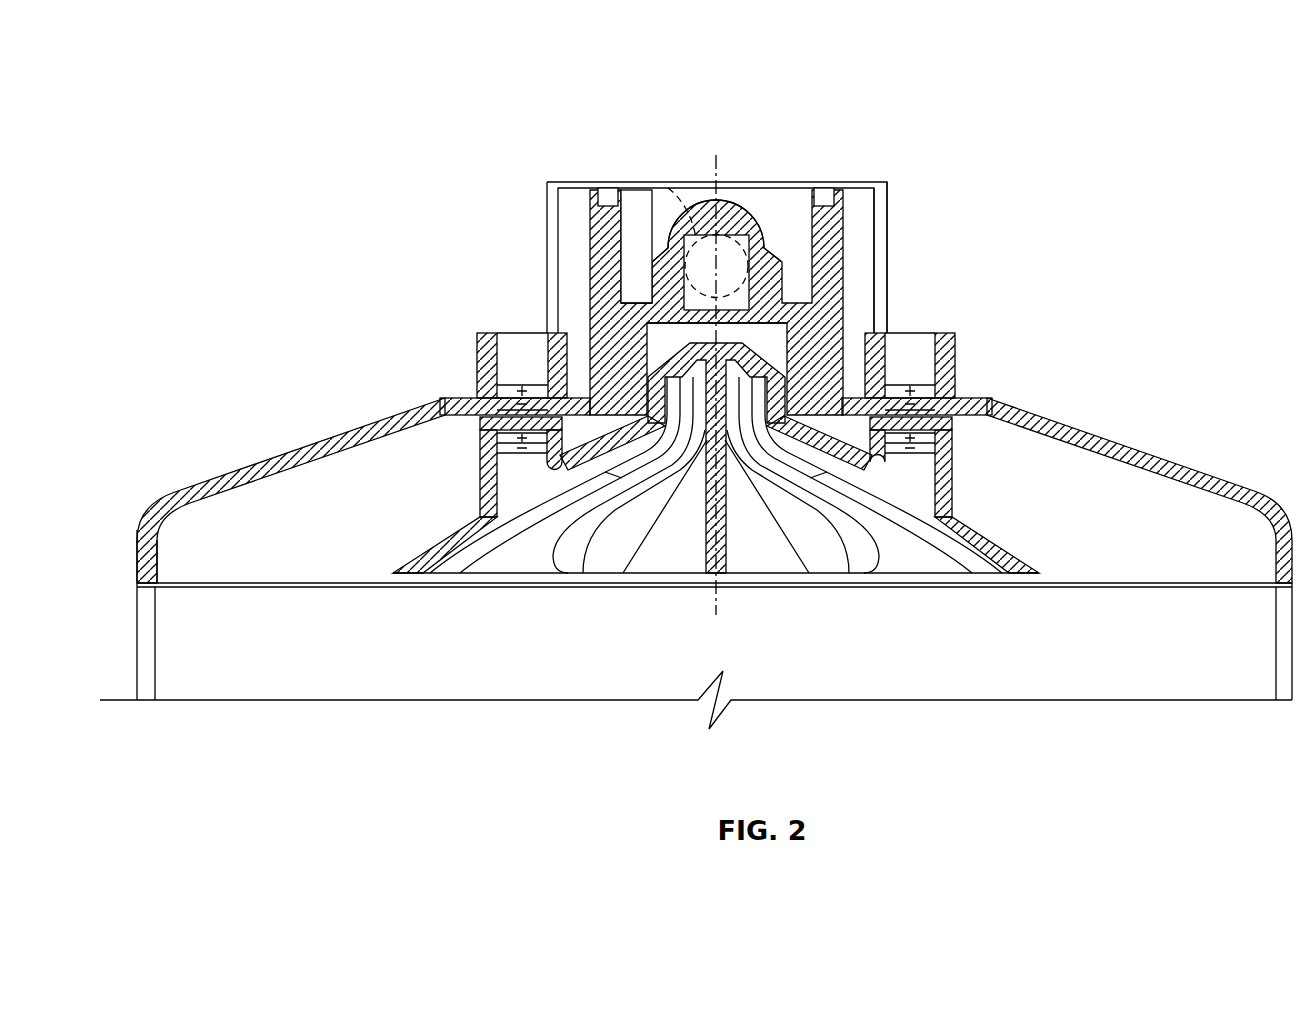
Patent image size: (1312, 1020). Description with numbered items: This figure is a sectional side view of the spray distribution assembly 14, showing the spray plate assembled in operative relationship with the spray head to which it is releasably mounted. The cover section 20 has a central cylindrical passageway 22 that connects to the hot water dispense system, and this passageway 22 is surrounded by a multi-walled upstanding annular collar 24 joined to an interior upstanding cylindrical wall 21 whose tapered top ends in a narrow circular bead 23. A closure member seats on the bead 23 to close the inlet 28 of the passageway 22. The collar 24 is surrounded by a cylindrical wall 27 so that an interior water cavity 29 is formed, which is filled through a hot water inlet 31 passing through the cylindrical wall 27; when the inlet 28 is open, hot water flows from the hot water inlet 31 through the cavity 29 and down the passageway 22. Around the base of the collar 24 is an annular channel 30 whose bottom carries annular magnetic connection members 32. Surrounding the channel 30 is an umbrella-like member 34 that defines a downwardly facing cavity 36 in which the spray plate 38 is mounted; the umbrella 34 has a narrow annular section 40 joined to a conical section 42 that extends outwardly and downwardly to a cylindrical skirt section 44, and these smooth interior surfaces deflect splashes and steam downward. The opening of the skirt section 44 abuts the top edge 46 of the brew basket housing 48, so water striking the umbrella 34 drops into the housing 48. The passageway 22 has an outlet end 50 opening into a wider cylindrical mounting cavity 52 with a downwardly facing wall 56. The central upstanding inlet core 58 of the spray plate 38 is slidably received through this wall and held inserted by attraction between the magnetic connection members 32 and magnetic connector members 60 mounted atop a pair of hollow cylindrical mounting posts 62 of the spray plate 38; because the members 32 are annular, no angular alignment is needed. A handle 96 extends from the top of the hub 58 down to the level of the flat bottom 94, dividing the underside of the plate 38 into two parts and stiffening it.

The spray distribution assembly 14 is at (903, 318).
The cover section 20 is at (828, 263).
The interior upstanding cylindrical wall 21 is at (637, 305).
The central cylindrical passageway 22 is at (742, 258).
The bead 23 is at (684, 230).
The upstanding annular collar 24 is at (568, 228).
The cylindrical wall 27 is at (837, 222).
The inlet 28 is at (730, 228).
The interior water cavity 29 is at (655, 195).
The annular channel 30 is at (923, 363).
The hot water inlet 31 is at (673, 190).
The magnetic connection members 32 is at (925, 393).
The umbrella-like member 34 is at (1093, 420).
The downwardly facing cavity 36 is at (1127, 567).
The spray plate 38 is at (757, 552).
The annular section 40 is at (440, 393).
The conical section 42 is at (255, 455).
The cylindrical skirt section 44 is at (148, 550).
The top edge 46 is at (145, 592).
The brew basket housing 48 is at (1072, 688).
The outlet end 50 is at (723, 325).
The cylindrical mounting cavity 52 is at (658, 342).
The downwardly facing wall 56 is at (560, 468).
The central upstanding inlet core 58 is at (765, 460).
The magnetic connector members 60 is at (488, 443).
The mounting posts 62 is at (953, 460).
The flat bottom 94 is at (1007, 577).
The handle 96 is at (713, 600).